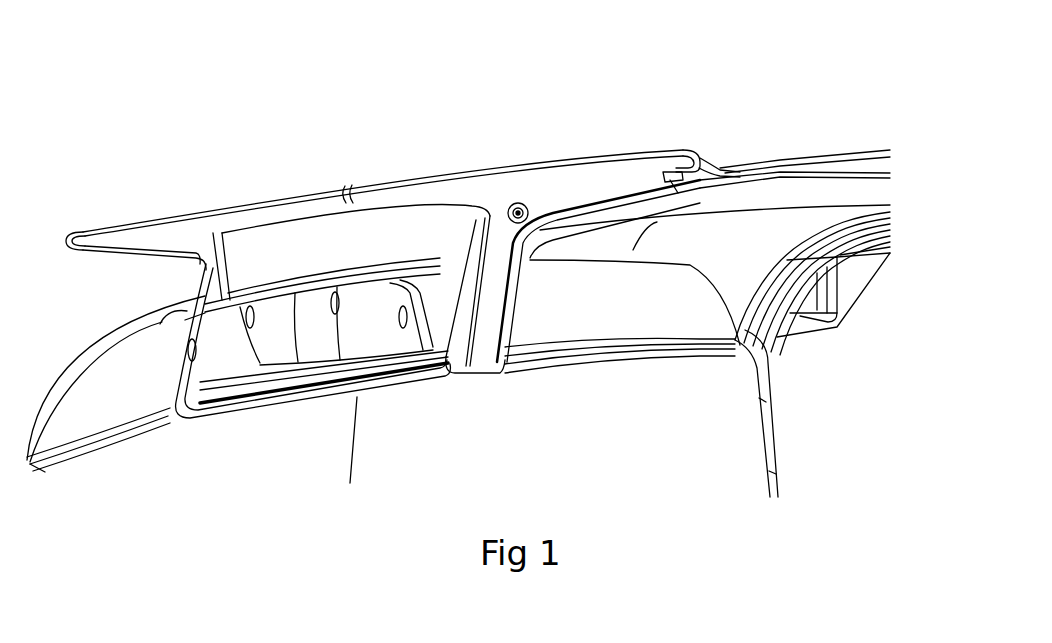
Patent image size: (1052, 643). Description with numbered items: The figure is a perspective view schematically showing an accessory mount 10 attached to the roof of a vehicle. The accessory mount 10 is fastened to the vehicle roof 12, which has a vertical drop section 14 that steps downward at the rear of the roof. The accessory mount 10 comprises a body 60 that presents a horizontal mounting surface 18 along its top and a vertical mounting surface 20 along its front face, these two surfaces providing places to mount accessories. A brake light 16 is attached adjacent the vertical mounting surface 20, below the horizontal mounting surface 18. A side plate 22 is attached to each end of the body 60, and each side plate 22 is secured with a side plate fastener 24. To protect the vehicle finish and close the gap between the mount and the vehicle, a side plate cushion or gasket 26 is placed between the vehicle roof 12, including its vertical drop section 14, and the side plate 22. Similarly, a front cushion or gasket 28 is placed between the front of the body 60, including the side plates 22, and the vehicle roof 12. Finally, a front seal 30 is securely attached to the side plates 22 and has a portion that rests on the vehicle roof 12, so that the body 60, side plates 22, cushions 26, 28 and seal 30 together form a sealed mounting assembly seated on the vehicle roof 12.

The accessory mount 10 is at (510, 130).
The vehicle roof 12 is at (763, 190).
The vertical drop section 14 is at (677, 320).
The brake light 16 is at (230, 357).
The horizontal mounting surface 18 is at (257, 209).
The vertical mounting surface 20 is at (444, 247).
The side plate 22 is at (160, 243).
The side plate fastener 24 is at (528, 207).
The side plate cushion 26 is at (513, 288).
The front cushion 28 is at (683, 183).
The front seal 30 is at (710, 167).
The body 60 is at (212, 200).